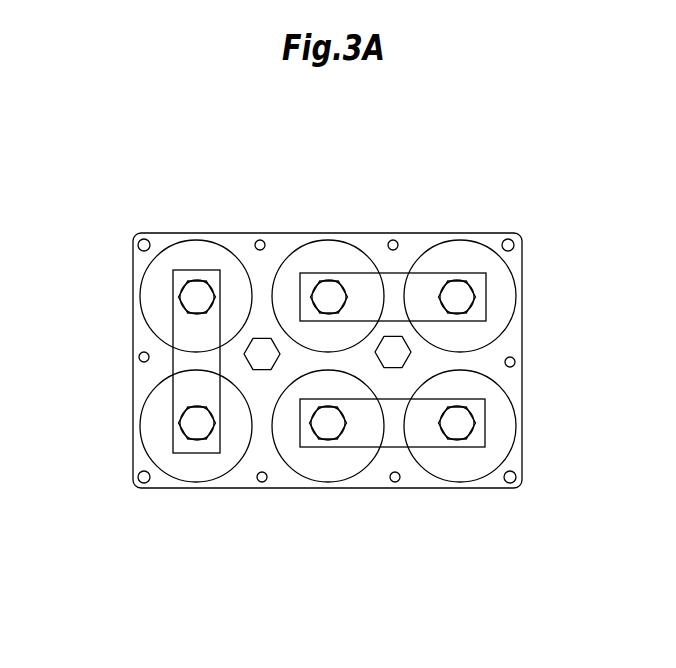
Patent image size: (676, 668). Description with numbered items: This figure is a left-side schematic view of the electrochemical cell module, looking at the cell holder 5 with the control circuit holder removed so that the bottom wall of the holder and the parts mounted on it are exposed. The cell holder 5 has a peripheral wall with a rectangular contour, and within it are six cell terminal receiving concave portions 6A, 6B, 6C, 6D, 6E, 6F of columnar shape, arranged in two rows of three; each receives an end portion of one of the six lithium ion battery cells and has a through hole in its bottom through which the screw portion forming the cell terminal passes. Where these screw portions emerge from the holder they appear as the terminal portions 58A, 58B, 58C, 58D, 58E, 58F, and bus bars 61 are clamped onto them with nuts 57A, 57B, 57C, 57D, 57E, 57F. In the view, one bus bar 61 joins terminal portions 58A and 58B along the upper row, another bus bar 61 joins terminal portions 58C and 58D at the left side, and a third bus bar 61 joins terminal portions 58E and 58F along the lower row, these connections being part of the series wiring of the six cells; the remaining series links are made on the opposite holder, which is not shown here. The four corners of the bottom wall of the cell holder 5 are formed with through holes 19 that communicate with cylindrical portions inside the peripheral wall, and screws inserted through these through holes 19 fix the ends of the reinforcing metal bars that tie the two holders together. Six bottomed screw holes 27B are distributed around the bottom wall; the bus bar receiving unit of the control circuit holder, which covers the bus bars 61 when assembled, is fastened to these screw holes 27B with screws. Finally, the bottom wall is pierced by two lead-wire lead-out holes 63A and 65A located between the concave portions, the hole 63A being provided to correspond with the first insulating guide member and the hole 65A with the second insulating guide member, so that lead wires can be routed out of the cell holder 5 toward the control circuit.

The cell holder 5 is at (522, 248).
The cell terminal receiving concave portion 6A is at (515, 283).
The cell terminal receiving concave portion 6B is at (299, 245).
The cell terminal receiving concave portion 6C is at (140, 295).
The cell terminal receiving concave portion 6D is at (140, 433).
The cell terminal receiving concave portion 6E is at (361, 471).
The cell terminal receiving concave portion 6F is at (513, 423).
The through hole 19 is at (139, 246).
The bottomed screw hole 27B is at (260, 239).
The nut 57A is at (456, 289).
The nut 57B is at (321, 289).
The nut 57C is at (192, 290).
The nut 57D is at (190, 430).
The nut 57E is at (323, 428).
The nut 57F is at (455, 435).
The terminal portion 58A is at (462, 293).
The terminal portion 58B is at (327, 291).
The terminal portion 58C is at (202, 290).
The terminal portion 58D is at (200, 426).
The terminal portion 58E is at (333, 418).
The terminal portion 58F is at (463, 427).
The bus bar 61 is at (185, 331).
The lead-wire lead-out hole 63A is at (393, 350).
The lead-wire lead-out hole 65A is at (262, 368).